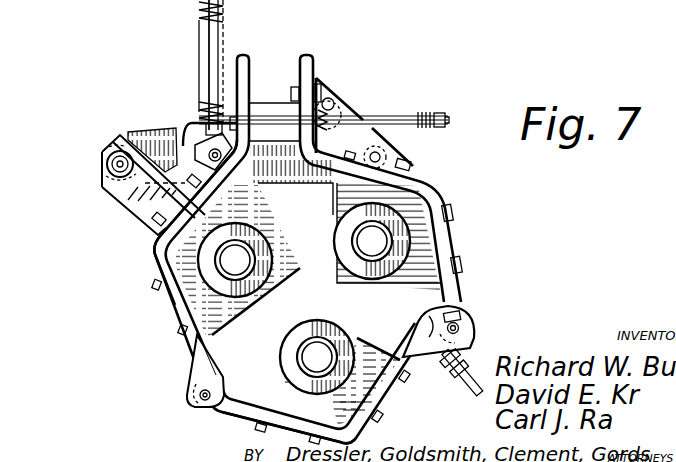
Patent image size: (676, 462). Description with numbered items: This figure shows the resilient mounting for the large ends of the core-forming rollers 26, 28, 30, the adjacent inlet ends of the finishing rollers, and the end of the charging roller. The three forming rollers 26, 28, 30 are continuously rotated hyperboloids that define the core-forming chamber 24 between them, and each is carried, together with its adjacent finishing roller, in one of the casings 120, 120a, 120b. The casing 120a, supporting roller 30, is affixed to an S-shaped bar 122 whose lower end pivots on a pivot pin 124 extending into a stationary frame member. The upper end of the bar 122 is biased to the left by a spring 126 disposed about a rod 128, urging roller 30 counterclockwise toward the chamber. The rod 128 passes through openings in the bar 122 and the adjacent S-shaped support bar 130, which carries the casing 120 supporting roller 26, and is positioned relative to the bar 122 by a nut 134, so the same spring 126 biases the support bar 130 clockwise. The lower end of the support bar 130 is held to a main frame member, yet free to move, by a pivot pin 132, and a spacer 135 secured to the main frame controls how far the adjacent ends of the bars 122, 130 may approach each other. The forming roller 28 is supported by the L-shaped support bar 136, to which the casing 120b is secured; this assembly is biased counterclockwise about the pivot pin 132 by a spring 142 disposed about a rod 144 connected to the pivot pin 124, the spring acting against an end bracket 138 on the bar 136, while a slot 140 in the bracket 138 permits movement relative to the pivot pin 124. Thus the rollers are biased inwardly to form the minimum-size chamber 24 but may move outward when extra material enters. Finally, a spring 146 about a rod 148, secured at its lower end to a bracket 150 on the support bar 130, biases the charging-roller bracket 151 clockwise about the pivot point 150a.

The core-forming chamber 24 is at (290, 295).
The core-forming roller 26 is at (247, 238).
The core-forming roller 28 is at (322, 350).
The core-forming roller 30 is at (365, 240).
The casing 120 is at (282, 322).
The casing 120a is at (338, 208).
The casing 120b is at (262, 388).
The S-shaped bar 122 is at (434, 192).
The pivot pin 124 is at (478, 333).
The spring 126 is at (380, 117).
The rod 128 is at (403, 138).
The S-shaped support bar 130 is at (160, 253).
The pivot pin 132 is at (202, 395).
The nut 134 is at (439, 112).
The spacer 135 is at (271, 108).
The L-shaped support bar 136 is at (290, 424).
The end bracket 138 is at (427, 331).
The slot 140 is at (455, 316).
The spring 142 is at (465, 372).
The rod 144 is at (470, 389).
The spring 146 is at (202, 68).
The rod 148 is at (218, 43).
The bracket 150 is at (187, 175).
The pivot point 150a is at (112, 165).
The bracket 151 is at (140, 142).